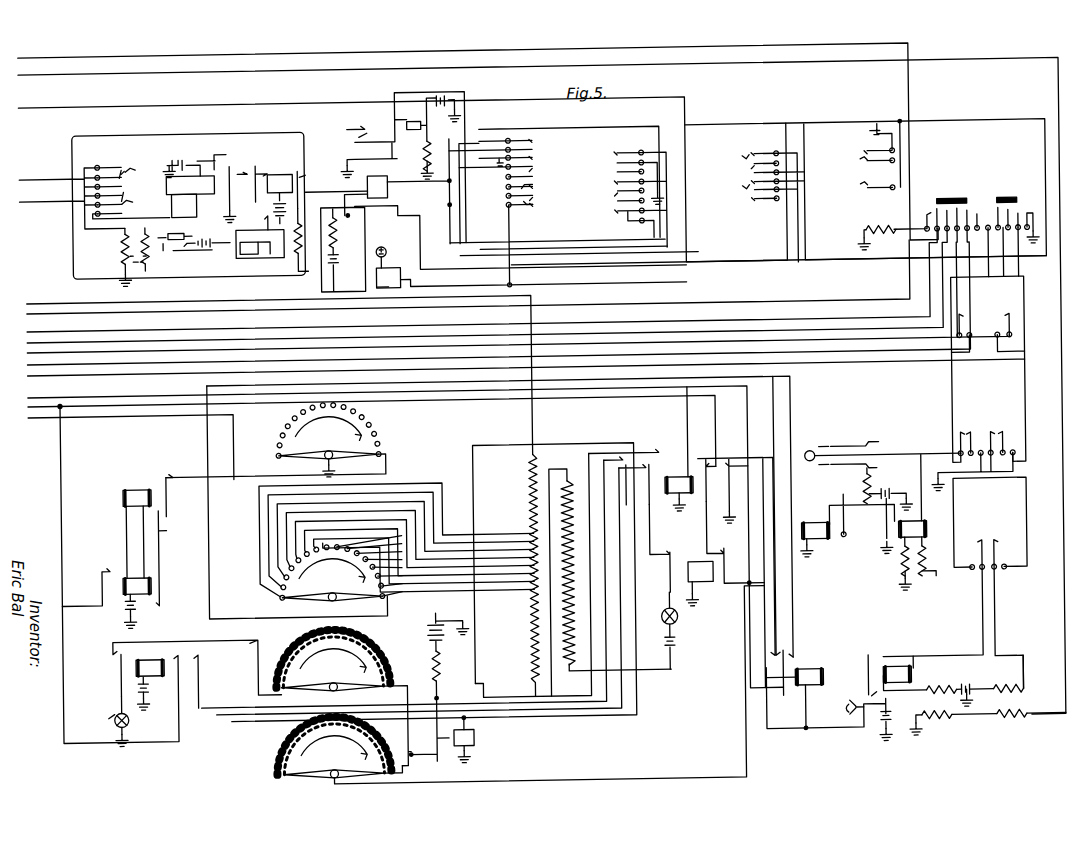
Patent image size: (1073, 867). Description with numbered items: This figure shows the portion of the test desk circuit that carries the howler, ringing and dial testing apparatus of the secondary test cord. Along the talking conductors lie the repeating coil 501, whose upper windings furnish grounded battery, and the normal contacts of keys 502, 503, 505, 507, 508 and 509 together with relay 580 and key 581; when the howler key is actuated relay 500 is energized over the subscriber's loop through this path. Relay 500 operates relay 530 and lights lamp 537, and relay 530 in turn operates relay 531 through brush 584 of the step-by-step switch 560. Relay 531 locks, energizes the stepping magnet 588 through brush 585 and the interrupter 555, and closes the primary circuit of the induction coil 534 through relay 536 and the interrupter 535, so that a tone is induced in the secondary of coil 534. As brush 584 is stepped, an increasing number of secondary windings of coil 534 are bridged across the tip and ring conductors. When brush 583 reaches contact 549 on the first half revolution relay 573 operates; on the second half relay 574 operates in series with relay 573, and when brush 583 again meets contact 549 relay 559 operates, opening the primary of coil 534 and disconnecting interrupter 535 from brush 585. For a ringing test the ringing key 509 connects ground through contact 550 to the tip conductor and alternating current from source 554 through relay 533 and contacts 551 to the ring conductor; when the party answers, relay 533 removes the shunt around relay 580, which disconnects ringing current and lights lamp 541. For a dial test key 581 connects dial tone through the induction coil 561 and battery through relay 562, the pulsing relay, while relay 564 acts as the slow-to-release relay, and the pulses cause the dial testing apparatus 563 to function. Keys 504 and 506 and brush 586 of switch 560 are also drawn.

The relay 500 is at (907, 687).
The repeating coil 501 is at (988, 711).
The key 502 is at (983, 545).
The key 503 is at (983, 435).
The relay contacts 504 is at (983, 318).
The key 505 is at (980, 208).
The relay contacts 506 is at (865, 183).
The key 507 is at (751, 182).
The key 508 is at (612, 190).
The ringing key 509 is at (540, 194).
The relay 530 is at (812, 688).
The relay 531 is at (668, 468).
The relay 533 is at (396, 268).
The induction coil 534 is at (557, 650).
The interrupter 535 is at (675, 625).
The relay 536 is at (690, 556).
The lamp 537 is at (845, 712).
The lamp 541 is at (395, 117).
The contact 549 is at (380, 444).
The contact 550 is at (543, 163).
The contacts 551 is at (537, 206).
The source of alternating current 554 is at (389, 246).
The interrupter 555 is at (110, 720).
The relay 559 is at (164, 648).
The step-by-step switch 560 is at (297, 501).
The induction coil 561 is at (140, 272).
The relay 562 is at (212, 160).
The dial testing apparatus 563 is at (238, 246).
The relay 564 is at (282, 170).
The relay 573 is at (113, 605).
The relay 574 is at (135, 477).
The relay 580 is at (391, 185).
The key 581 is at (126, 175).
The brush 583 is at (318, 438).
The brush 584 is at (322, 576).
The brush 585 is at (318, 666).
The bank and wiper 586 is at (318, 753).
The stepping magnet 588 is at (471, 738).